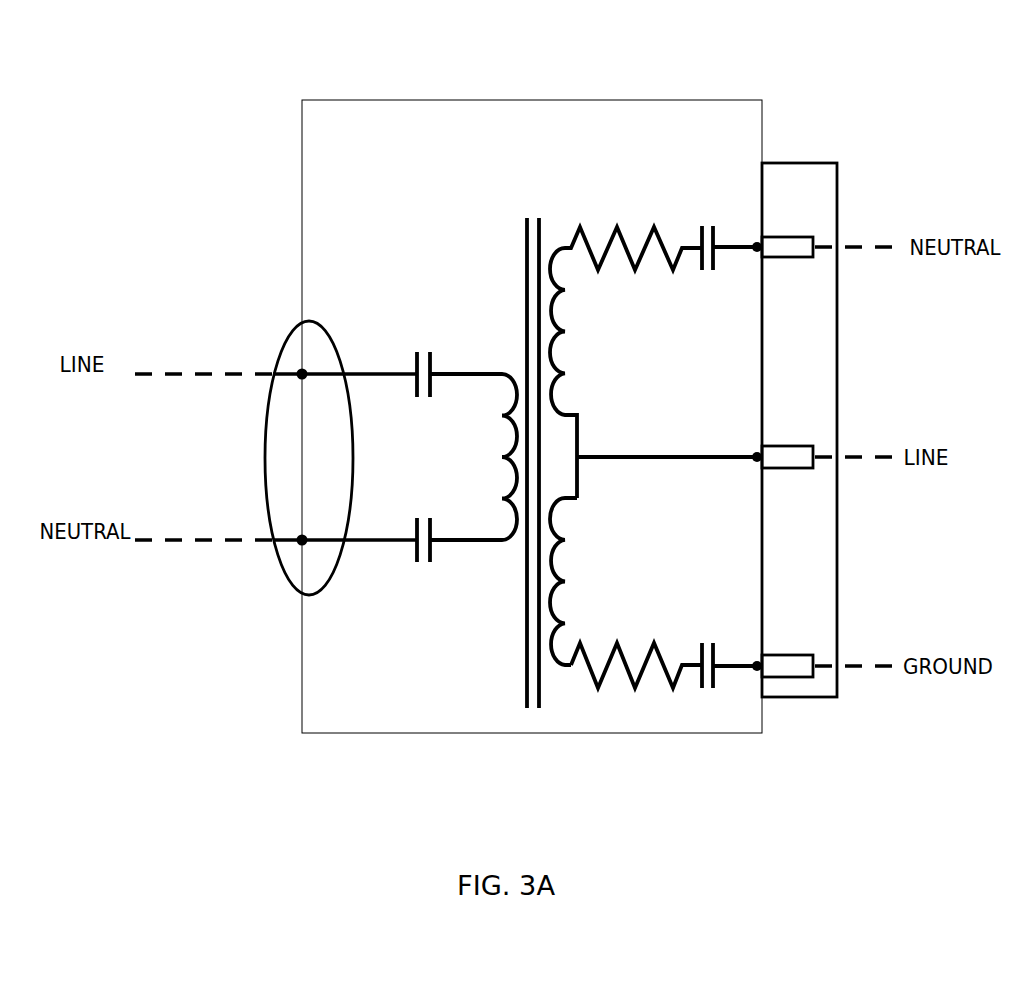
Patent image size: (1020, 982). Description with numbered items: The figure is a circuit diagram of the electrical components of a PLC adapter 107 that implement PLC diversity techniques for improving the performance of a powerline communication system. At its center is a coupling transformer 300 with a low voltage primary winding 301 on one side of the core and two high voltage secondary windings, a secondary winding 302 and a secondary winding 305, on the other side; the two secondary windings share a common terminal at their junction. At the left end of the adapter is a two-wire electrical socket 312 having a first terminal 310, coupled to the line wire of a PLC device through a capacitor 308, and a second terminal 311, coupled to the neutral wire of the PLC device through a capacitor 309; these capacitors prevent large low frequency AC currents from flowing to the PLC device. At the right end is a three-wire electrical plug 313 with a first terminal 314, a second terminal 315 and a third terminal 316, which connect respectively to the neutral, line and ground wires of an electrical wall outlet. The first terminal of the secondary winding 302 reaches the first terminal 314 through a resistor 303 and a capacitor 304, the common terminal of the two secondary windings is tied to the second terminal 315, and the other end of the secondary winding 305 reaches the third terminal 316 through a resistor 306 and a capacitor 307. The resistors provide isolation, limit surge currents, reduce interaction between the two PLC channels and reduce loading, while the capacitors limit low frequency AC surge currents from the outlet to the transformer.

The PLC adapter 107 is at (647, 100).
The coupling transformer 300 is at (540, 216).
The primary winding 301 is at (502, 458).
The secondary winding 302 is at (553, 395).
The resistor 303 is at (643, 272).
The capacitor 304 is at (718, 275).
The secondary winding 305 is at (562, 538).
The resistor 306 is at (603, 640).
The capacitor 307 is at (711, 640).
The capacitor 308 is at (423, 350).
The capacitor 309 is at (423, 565).
The first terminal 310 is at (303, 380).
The second terminal 311 is at (302, 534).
The two-wire electrical socket 312 is at (265, 445).
The three-wire electrical plug 313 is at (838, 190).
The first terminal 314 is at (792, 236).
The second terminal 315 is at (792, 445).
The third terminal 316 is at (793, 654).